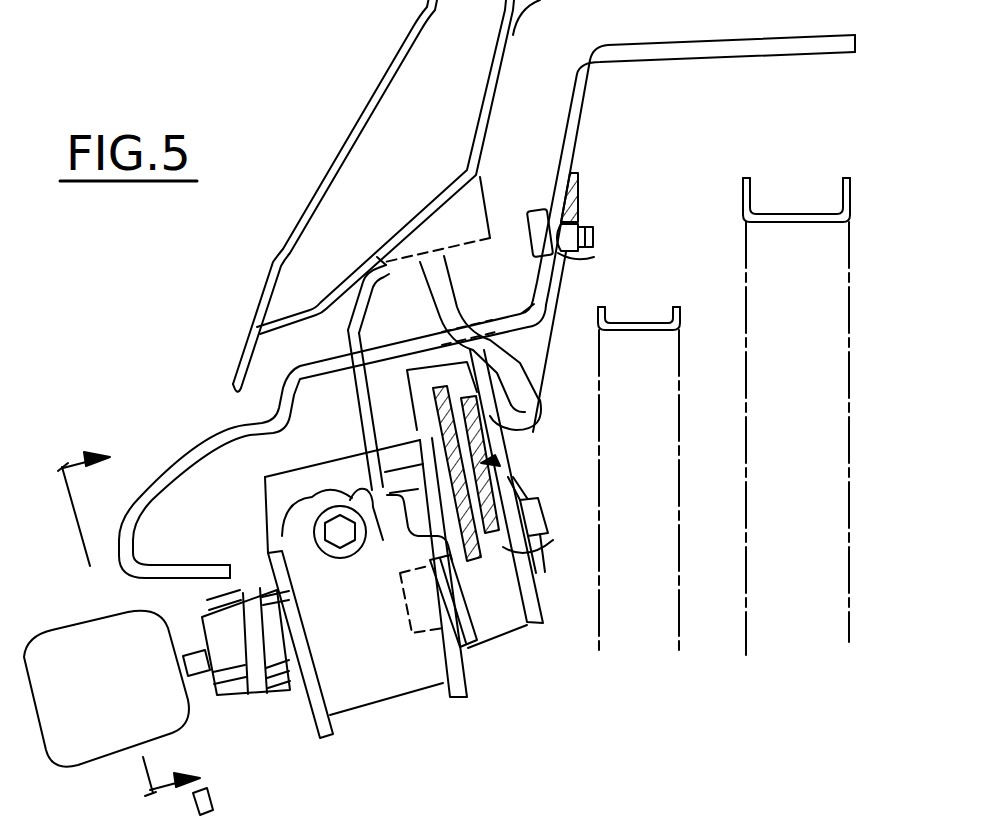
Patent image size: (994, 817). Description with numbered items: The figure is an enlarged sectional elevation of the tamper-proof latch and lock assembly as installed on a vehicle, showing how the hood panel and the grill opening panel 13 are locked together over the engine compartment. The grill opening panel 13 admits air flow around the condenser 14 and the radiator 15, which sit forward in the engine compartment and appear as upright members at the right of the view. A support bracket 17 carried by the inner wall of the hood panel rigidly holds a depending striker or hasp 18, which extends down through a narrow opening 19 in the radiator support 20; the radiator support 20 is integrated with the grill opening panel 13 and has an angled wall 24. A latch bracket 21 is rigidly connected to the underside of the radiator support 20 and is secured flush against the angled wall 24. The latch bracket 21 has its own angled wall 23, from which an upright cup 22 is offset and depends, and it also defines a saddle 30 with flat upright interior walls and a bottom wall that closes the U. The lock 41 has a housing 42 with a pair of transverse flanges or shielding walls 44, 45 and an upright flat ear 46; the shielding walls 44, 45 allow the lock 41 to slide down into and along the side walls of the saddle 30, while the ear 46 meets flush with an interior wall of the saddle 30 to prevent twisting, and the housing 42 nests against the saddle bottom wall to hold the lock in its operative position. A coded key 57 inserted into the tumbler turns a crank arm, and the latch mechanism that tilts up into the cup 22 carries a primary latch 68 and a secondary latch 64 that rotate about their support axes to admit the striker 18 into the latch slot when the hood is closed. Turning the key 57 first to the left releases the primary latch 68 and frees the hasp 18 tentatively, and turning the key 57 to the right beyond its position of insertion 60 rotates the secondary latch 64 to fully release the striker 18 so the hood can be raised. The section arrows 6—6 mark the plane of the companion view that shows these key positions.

The section line 6- 6 is at (142, 613).
The grill opening panel 13 is at (213, 800).
The condenser 14 is at (648, 322).
The radiator 15 is at (780, 214).
The support bracket 17 is at (480, 200).
The striker or hasp 18 is at (443, 277).
The narrow opening 19 is at (526, 309).
The radiator support 20 is at (566, 108).
The latch bracket 21 is at (570, 323).
The cup 22 is at (512, 553).
The angled wall 23 is at (594, 250).
The angled wall of radiator support 24 is at (576, 152).
The saddle 30 is at (265, 495).
The lock 41 is at (384, 692).
The housing 42 is at (280, 697).
The shielding wall 44 is at (457, 673).
The shielding wall 45 is at (318, 705).
The upright flat ear 46 is at (308, 568).
The coded key 57 is at (189, 655).
The position of insertion 60 is at (522, 442).
The secondary latch 64 is at (432, 412).
The primary latch 68 is at (488, 460).